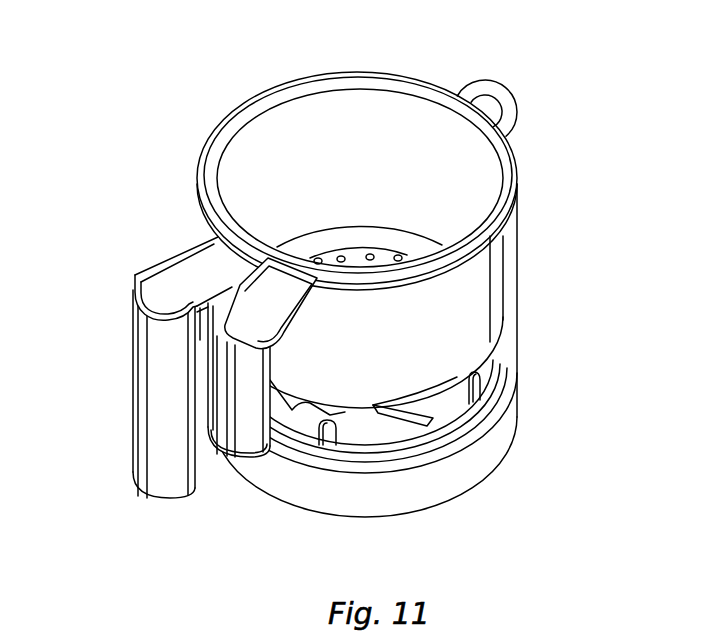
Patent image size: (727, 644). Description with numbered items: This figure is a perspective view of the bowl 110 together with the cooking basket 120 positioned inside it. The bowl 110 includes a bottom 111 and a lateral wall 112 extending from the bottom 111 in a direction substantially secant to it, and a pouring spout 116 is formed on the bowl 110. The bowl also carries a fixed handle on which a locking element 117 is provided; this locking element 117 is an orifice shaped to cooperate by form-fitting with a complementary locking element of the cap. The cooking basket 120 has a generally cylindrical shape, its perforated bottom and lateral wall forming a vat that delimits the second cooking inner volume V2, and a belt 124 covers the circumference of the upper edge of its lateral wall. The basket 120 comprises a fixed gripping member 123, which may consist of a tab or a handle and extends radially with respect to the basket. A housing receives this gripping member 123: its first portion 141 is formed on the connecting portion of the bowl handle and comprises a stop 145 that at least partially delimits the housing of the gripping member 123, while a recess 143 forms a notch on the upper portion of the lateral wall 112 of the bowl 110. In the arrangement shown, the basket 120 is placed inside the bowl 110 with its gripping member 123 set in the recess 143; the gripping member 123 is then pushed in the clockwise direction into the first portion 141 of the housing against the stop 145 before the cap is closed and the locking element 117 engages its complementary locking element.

The bowl 110 is at (517, 477).
The bottom 111 is at (507, 427).
The lateral wall 112 is at (508, 273).
The pouring spout 116 is at (509, 90).
The locking element 117 is at (203, 330).
The cooking basket 120 is at (492, 296).
The gripping member 123 is at (233, 343).
The belt 124 is at (492, 207).
The first portion of the housing 141 is at (168, 299).
The recess 143 is at (208, 253).
The stop 145 is at (158, 268).
The second cooking inner volume V2 is at (358, 126).